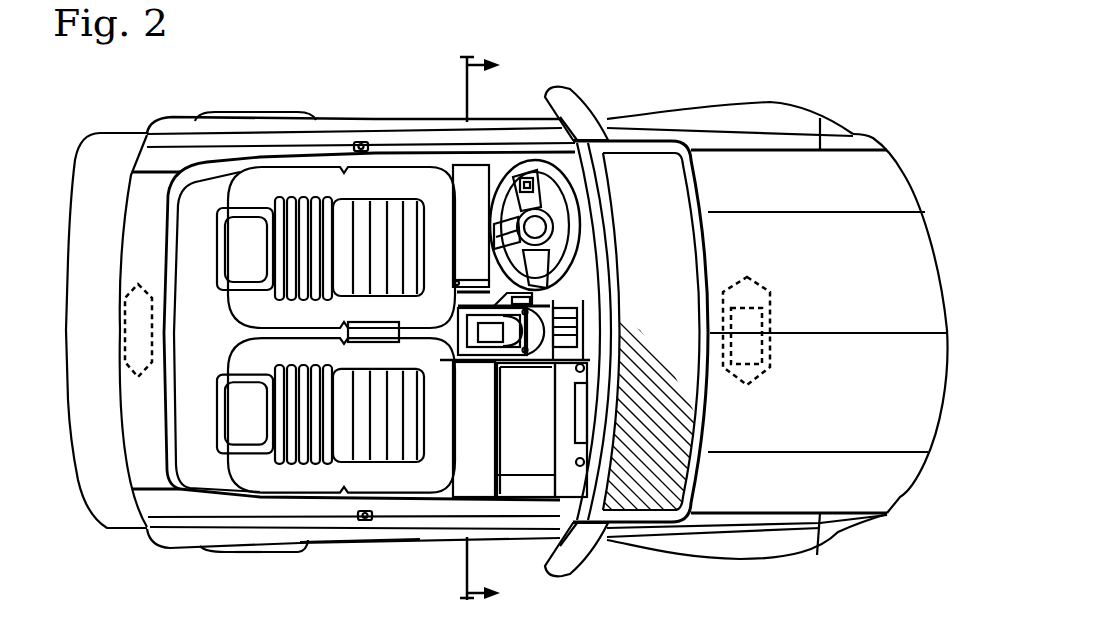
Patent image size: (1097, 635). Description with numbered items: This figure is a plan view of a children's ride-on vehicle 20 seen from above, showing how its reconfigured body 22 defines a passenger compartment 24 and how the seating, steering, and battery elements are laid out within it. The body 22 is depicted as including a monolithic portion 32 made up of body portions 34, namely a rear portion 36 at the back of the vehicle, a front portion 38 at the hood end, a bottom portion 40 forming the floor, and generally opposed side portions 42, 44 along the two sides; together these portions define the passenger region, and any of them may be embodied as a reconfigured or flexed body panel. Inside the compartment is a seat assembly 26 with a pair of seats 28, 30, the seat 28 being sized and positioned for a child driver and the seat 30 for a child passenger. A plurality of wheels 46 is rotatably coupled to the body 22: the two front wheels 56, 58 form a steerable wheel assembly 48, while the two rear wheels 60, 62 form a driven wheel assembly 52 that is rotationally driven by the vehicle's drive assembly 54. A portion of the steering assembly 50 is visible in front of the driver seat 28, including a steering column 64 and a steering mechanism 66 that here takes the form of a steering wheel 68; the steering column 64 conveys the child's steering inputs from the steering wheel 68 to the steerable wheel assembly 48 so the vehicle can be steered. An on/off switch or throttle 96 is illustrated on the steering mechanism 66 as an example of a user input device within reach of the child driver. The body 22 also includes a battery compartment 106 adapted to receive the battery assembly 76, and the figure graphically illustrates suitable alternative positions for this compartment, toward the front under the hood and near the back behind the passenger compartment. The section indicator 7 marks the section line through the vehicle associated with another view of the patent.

The section line 7- 7 is at (488, 331).
The children's ride-on vehicle 20 is at (328, 74).
The reconfigured body 22 is at (390, 100).
The passenger compartment 24 is at (462, 183).
The seat assembly 26 is at (321, 203).
The seat 28 is at (230, 197).
The seat 30 is at (228, 351).
The monolithic portion 32 is at (619, 102).
The body portions 34 is at (657, 109).
The rear portion 36 is at (65, 258).
The front portion 38 is at (838, 128).
The bottom portion 40 is at (539, 446).
The side portion 42 is at (498, 122).
The side portion 44 is at (400, 543).
The wheels 46 is at (216, 561).
The steerable wheel assembly 48 is at (758, 567).
The steering assembly 50 is at (587, 207).
The driven wheel assembly 52 is at (246, 560).
The drive assembly 54 is at (361, 542).
The front wheel 56 is at (773, 94).
The front wheel 58 is at (788, 562).
The rear wheel 60 is at (287, 112).
The rear wheel 62 is at (282, 550).
The steering column 64 is at (569, 221).
The steering mechanism 66 is at (582, 277).
The steering wheel 68 is at (562, 284).
The battery assembly 76 is at (772, 306).
The on/off switch or throttle 96 is at (530, 187).
The battery compartment 106 is at (124, 345).